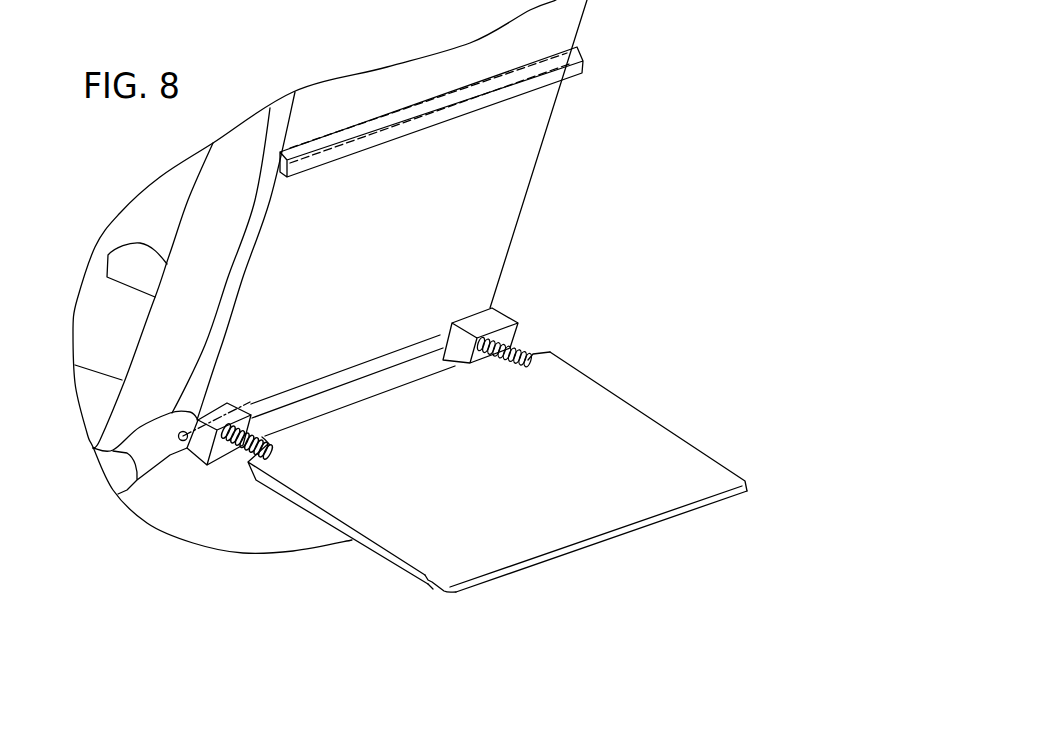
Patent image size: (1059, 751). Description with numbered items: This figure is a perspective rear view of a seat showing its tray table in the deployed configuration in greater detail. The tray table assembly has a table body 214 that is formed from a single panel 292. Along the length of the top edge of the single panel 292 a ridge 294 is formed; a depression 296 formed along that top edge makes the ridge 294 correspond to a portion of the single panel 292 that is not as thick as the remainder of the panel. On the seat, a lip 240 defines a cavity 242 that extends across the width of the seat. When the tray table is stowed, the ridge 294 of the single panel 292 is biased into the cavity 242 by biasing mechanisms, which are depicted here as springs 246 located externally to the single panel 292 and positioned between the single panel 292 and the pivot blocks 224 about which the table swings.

The table body 214 is at (499, 496).
The pivot blocks 224 is at (240, 407).
The lip 240 is at (410, 130).
The cavity 242 is at (368, 128).
The springs 246 is at (240, 452).
The single panel 292 is at (673, 454).
The ridge 294 is at (458, 592).
The depression 296 is at (422, 596).